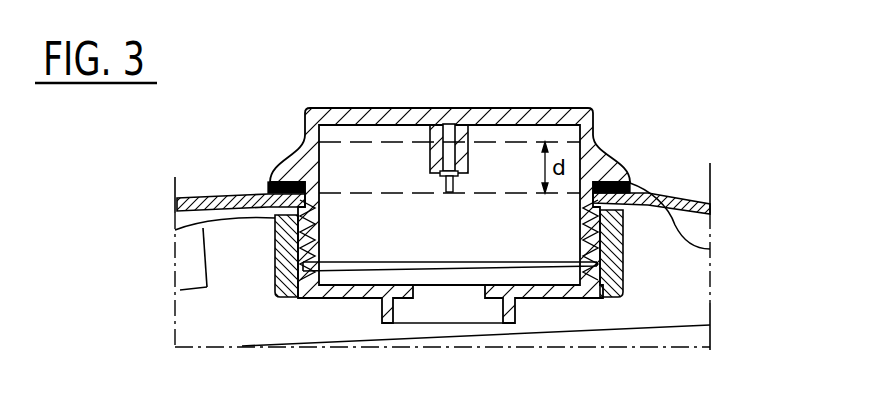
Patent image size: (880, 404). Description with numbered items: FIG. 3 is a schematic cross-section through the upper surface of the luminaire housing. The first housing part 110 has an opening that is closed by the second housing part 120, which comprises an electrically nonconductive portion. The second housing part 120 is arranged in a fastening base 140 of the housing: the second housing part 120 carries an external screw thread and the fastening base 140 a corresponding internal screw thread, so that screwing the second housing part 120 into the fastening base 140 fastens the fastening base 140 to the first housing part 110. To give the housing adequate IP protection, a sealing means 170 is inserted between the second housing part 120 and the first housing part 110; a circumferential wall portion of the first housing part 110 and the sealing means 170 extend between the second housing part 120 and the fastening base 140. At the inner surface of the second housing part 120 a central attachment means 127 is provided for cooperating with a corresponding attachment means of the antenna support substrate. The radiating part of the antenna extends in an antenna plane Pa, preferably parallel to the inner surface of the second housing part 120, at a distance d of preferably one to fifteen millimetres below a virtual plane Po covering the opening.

The first housing part 110 is at (227, 190).
The second housing part 120 is at (558, 105).
The central attachment means 127 is at (443, 133).
The fastening base 140 is at (317, 220).
The sealing means 170 is at (710, 249).
The antenna plane Pa is at (369, 140).
The virtual plane Po is at (350, 192).